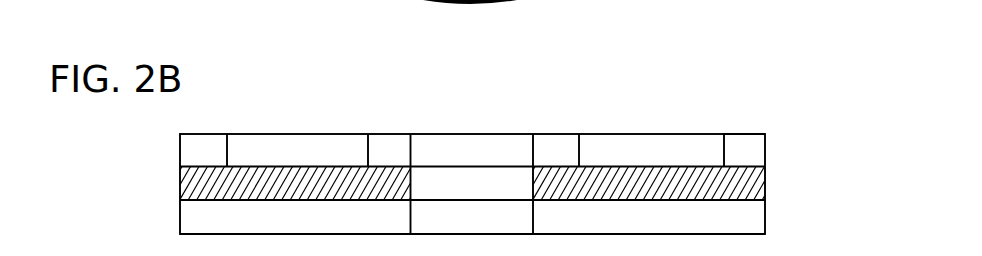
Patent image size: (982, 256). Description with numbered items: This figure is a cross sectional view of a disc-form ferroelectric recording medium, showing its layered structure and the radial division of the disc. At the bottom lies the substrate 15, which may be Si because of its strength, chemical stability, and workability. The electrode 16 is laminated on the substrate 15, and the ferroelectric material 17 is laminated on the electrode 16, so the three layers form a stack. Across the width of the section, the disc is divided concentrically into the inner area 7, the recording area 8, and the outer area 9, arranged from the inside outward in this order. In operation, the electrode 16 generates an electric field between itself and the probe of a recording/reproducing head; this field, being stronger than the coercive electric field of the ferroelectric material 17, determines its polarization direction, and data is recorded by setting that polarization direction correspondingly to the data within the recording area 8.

The inner area 7 is at (553, 133).
The recording area 8 is at (673, 133).
The outer area 9 is at (755, 133).
The substrate 15 is at (768, 214).
The electrode 16 is at (768, 181).
The ferroelectric material 17 is at (768, 149).